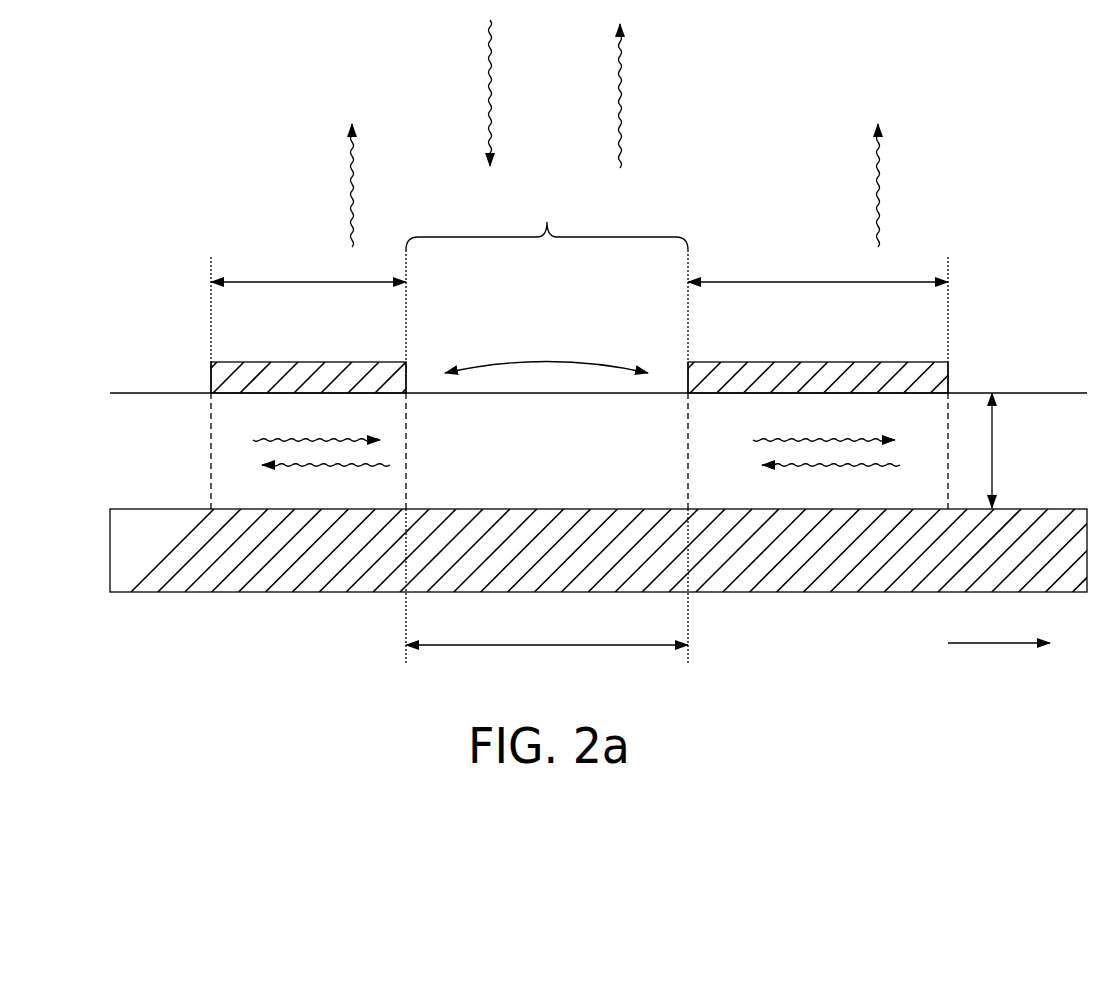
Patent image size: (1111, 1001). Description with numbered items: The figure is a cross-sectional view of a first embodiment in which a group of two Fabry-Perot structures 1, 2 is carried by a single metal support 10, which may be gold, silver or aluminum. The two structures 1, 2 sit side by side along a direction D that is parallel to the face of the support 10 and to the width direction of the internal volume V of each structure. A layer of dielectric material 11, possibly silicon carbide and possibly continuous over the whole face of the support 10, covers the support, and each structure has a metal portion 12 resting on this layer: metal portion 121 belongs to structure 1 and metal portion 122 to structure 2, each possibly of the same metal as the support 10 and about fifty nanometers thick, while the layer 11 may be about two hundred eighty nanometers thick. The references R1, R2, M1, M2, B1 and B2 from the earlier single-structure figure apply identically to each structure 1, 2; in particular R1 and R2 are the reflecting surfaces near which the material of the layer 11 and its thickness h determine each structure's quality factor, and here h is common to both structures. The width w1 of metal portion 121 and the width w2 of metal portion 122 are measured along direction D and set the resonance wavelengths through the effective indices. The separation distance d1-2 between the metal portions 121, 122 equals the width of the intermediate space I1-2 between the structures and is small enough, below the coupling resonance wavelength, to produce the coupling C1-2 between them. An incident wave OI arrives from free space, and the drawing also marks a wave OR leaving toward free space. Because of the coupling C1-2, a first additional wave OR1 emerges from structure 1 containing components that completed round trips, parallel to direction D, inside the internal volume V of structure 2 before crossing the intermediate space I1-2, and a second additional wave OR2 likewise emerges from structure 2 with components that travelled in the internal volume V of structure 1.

The Fabry-Perot structure 1 is at (173, 222).
The Fabry-Perot structure 2 is at (773, 222).
The metal support 10 is at (96, 509).
The layer of dielectric material 11 is at (96, 393).
The metal portion 12 is at (582, 345).
The metal portion of structure 1 121 is at (228, 368).
The metal portion of structure 2 122 is at (930, 370).
The Fabry-Perot structure reference B1 is at (211, 390).
The Fabry-Perot structure reference B2 is at (409, 393).
The Fabry-Perot structure reference M1 is at (344, 509).
The Fabry-Perot structure reference M2 is at (340, 402).
The reflecting surface R1 is at (252, 527).
The reflecting surface R2 is at (403, 486).
The internal volume V is at (240, 431).
The incident wave OI is at (488, 73).
The reflected optical wave OR is at (622, 75).
The first additional wave OR1 is at (386, 185).
The second additional wave OR2 is at (913, 185).
The width of metal portion 12₁ w1 is at (308, 266).
The width of metal portion 12₂ w2 is at (818, 266).
The thickness of dielectric layer h is at (1006, 450).
The separation distance d1-2 is at (547, 667).
The intermediate space I1-2 is at (547, 219).
The coupling C1-2 is at (549, 362).
The direction D is at (1016, 646).